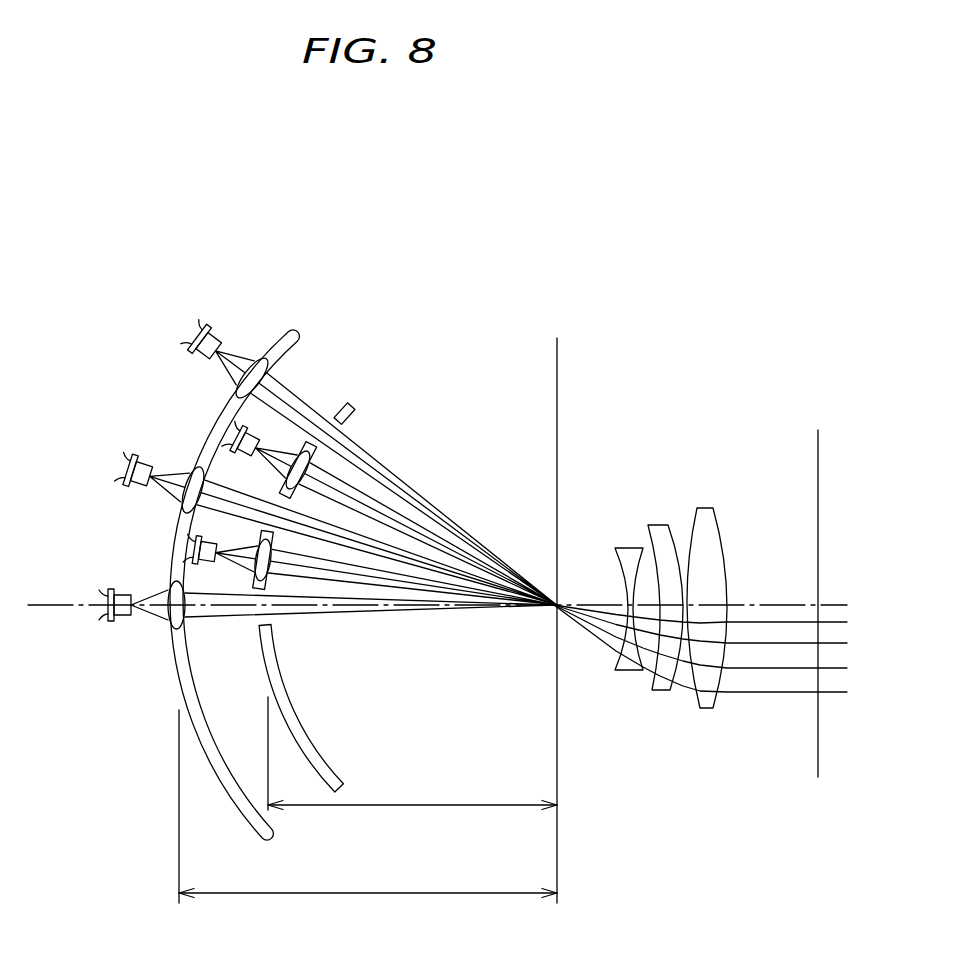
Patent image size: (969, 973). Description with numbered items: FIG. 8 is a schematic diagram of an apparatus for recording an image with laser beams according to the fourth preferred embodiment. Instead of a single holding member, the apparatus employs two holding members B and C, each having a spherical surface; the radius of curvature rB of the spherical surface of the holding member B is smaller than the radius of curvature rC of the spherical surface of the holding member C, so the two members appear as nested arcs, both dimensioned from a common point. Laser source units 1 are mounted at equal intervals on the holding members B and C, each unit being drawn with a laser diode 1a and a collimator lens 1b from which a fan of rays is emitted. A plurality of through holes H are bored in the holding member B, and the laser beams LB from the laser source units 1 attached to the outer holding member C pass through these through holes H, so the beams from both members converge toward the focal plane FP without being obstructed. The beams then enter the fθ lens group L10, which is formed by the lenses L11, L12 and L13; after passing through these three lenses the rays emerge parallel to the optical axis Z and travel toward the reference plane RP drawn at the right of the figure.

The laser source unit 1 is at (225, 222).
The laser diode 1a is at (217, 330).
The collimator lens 1b is at (260, 357).
The holding member C is at (297, 330).
The through hole H is at (275, 620).
The holding member B is at (353, 407).
The laser beam LB is at (307, 400).
The optical axis Z is at (68, 609).
The focal plane FP is at (557, 418).
The reference plane RP is at (818, 440).
The fθ lens group L10 is at (668, 686).
The lens L11 is at (632, 670).
The lens L12 is at (660, 690).
The lens L13 is at (724, 655).
The radius of curvature rB is at (412, 753).
The radius of curvature rC is at (368, 806).